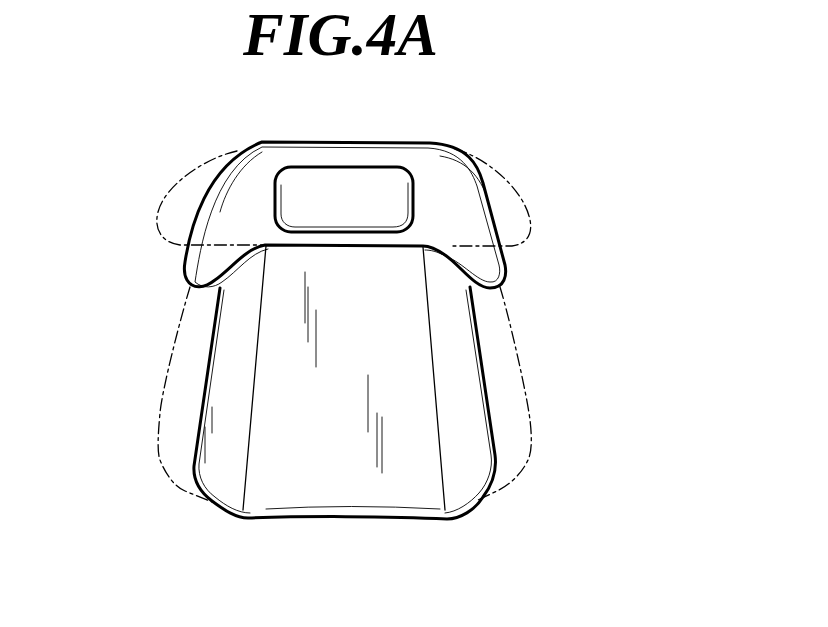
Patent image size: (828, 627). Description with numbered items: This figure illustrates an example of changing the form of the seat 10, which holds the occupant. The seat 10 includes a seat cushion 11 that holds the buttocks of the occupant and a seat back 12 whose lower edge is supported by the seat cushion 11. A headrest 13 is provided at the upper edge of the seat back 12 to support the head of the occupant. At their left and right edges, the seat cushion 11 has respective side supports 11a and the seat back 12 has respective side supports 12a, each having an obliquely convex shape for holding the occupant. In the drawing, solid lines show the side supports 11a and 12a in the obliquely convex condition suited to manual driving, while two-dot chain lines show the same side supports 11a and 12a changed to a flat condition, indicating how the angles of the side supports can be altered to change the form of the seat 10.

The seat 10 is at (612, 172).
The seat cushion 11 is at (348, 500).
The side supports 11a is at (532, 427).
The seat back 12 is at (430, 162).
The side supports 12a is at (522, 189).
The headrest 13 is at (344, 180).